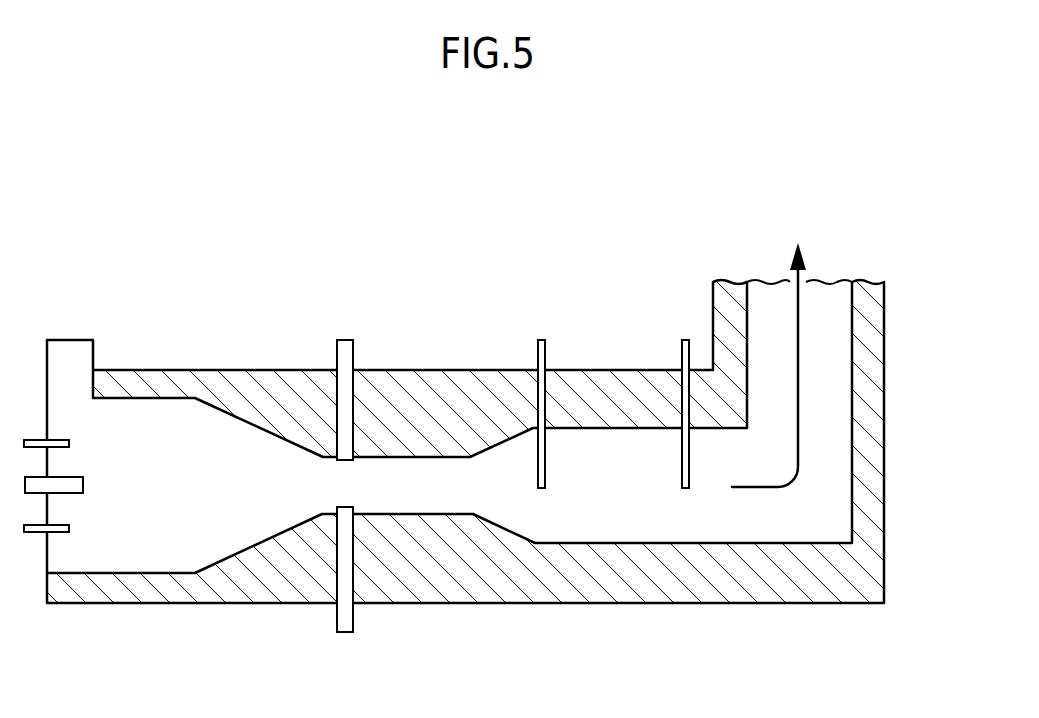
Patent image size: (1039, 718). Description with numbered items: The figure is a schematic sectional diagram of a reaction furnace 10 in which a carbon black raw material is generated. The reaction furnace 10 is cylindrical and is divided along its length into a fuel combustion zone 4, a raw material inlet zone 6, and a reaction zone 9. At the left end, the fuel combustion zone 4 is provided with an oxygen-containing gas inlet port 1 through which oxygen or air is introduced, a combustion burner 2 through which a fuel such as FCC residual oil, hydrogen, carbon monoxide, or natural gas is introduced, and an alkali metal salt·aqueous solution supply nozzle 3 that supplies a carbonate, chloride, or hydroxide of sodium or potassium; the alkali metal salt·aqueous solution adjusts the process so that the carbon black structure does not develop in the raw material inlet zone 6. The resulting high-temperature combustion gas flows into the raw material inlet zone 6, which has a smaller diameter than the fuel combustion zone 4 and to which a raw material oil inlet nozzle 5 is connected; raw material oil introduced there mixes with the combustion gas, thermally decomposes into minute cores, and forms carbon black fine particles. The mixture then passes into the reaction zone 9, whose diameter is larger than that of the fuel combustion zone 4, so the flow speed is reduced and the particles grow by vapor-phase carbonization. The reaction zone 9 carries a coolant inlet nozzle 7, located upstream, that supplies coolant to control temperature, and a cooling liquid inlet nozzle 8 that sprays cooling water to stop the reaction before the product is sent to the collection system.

The oxygen-containing gas inlet port 1 is at (67, 338).
The combustion burner 2 is at (83, 486).
The alkali metal salt·aqueous solution supply nozzle 3 is at (69, 443).
The fuel combustion zone 4 is at (179, 486).
The raw material oil inlet nozzle 5 is at (353, 352).
The raw material inlet zone 6 is at (403, 494).
The coolant inlet nozzle 7 is at (538, 352).
The cooling liquid inlet nozzle 8 is at (683, 352).
The reaction zone 9 is at (620, 494).
The reaction furnace 10 is at (864, 197).